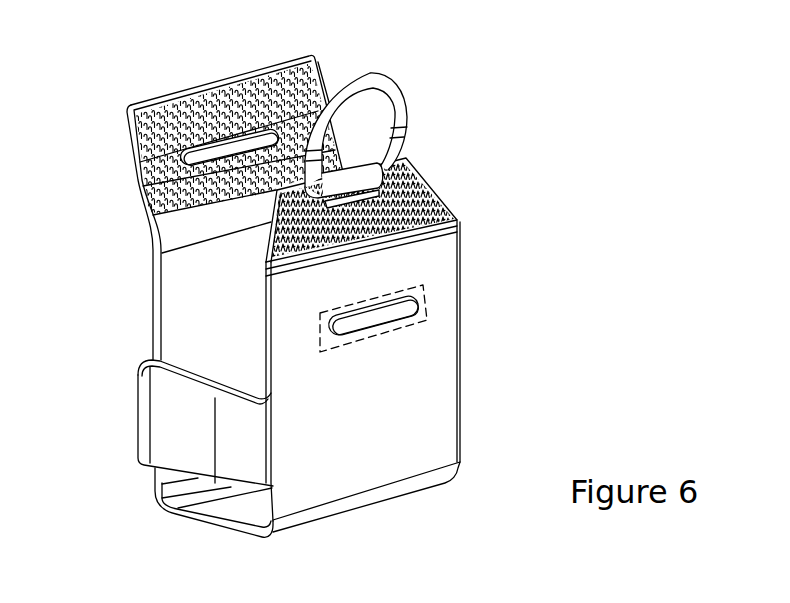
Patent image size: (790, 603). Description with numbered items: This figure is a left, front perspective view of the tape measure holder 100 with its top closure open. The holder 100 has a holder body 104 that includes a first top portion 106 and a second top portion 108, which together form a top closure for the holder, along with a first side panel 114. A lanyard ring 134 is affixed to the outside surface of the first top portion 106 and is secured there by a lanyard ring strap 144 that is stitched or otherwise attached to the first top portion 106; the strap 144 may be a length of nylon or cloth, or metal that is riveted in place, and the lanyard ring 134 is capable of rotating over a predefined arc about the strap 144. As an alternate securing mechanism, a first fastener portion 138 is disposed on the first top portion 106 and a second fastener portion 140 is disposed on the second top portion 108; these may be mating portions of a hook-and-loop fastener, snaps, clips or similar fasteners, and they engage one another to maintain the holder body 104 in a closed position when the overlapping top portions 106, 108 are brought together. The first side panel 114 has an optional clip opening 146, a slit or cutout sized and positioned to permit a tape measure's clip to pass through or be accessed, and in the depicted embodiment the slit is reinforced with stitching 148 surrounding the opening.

The holder 100 is at (578, 78).
The holder body 104 is at (458, 277).
The first top portion 106 is at (447, 207).
The second top portion 108 is at (138, 150).
The first side panel 114 is at (410, 431).
The lanyard ring 134 is at (390, 88).
The first fastener portion 138 is at (420, 188).
The second fastener portion 140 is at (320, 72).
The lanyard ring strap 144 is at (367, 178).
The clip opening 146 is at (420, 308).
The stitching 148 is at (412, 322).